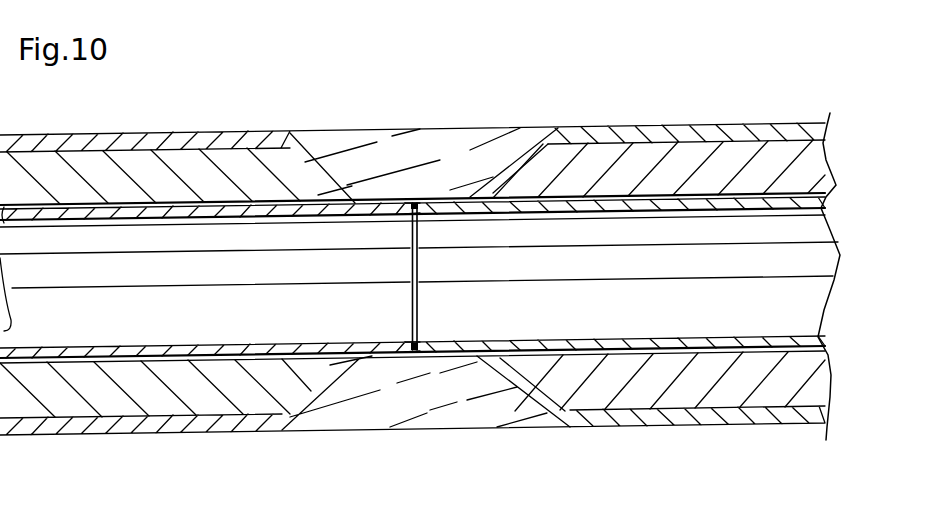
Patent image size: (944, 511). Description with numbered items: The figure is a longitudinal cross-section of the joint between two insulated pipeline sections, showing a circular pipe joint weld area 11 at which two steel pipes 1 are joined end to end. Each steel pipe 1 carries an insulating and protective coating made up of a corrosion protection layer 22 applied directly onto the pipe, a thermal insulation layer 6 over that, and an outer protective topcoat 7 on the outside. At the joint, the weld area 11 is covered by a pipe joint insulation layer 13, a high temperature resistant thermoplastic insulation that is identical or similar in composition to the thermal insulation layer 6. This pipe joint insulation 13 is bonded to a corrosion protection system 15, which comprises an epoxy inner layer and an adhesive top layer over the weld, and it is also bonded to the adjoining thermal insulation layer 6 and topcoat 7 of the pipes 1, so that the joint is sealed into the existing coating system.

The steel pipe 1 is at (212, 347).
The thermal insulation layer 6 is at (218, 172).
The outer protective topcoat 7 is at (719, 130).
The pipe joint weld area 11 is at (410, 318).
The pipe joint insulation layer 13 is at (383, 145).
The corrosion protection system 15 is at (453, 205).
The corrosion protection layer 22 is at (108, 203).